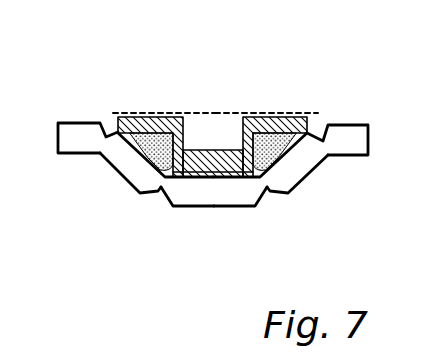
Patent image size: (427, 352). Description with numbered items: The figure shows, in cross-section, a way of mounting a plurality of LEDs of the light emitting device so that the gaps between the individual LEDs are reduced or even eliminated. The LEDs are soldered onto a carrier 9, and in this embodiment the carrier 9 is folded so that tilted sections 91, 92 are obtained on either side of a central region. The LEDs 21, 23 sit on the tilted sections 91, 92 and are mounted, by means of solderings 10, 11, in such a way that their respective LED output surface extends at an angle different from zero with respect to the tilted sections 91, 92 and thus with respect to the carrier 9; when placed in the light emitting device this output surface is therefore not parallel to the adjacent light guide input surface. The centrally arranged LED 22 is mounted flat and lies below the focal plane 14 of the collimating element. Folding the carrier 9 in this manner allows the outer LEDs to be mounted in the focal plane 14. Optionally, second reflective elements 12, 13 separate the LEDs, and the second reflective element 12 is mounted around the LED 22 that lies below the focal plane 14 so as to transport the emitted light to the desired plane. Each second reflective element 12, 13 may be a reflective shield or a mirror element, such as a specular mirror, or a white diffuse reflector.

The carrier 9 is at (72, 138).
The soldering 10 is at (147, 155).
The soldering 11 is at (268, 183).
The second reflective element 12 is at (174, 138).
The second reflective element 13 is at (258, 137).
The focal plane 14 is at (318, 113).
The LED 21 is at (113, 114).
The LED 22 is at (213, 150).
The LED 23 is at (310, 112).
The tilted section 91 is at (130, 168).
The tilted section 92 is at (313, 176).